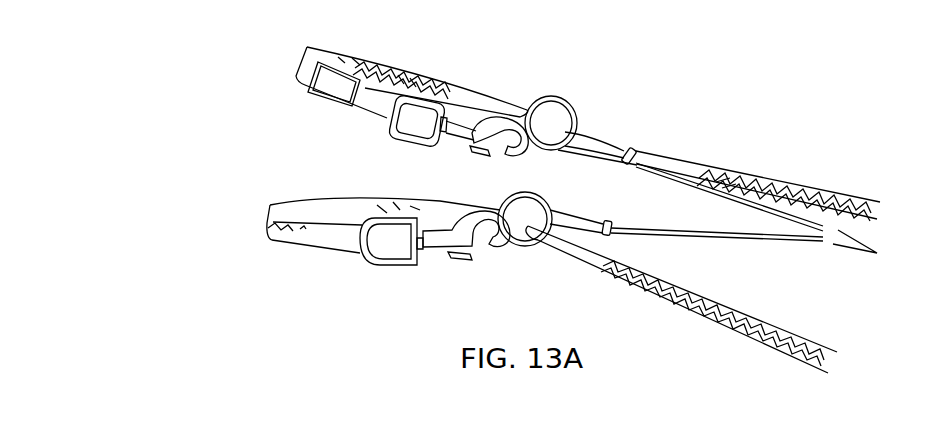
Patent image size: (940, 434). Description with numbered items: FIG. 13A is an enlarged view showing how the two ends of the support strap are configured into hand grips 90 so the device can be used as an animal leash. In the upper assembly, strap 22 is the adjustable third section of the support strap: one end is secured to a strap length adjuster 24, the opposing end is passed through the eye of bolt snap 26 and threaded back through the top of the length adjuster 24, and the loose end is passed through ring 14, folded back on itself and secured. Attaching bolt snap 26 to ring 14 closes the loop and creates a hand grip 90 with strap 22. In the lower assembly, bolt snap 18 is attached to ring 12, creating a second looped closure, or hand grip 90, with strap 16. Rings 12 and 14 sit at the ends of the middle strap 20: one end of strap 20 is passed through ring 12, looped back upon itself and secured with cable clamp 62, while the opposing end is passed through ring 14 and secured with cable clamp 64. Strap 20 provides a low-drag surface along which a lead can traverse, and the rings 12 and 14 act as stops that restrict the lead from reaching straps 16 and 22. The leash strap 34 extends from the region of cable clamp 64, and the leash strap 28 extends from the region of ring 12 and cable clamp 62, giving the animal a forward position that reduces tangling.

The hand grip 90 is at (270, 85).
The strap 22 is at (465, 98).
The strap length adjuster 24 is at (323, 97).
The bolt snap 26 is at (488, 138).
The ring 14 is at (563, 101).
The cable clamp 64 is at (633, 150).
The leash strap 34 is at (822, 197).
The strap 20 is at (872, 248).
The strap 16 is at (322, 235).
The bolt snap 18 is at (438, 248).
The ring 12 is at (548, 206).
The cable clamp 62 is at (612, 232).
The leash strap 28 is at (770, 340).